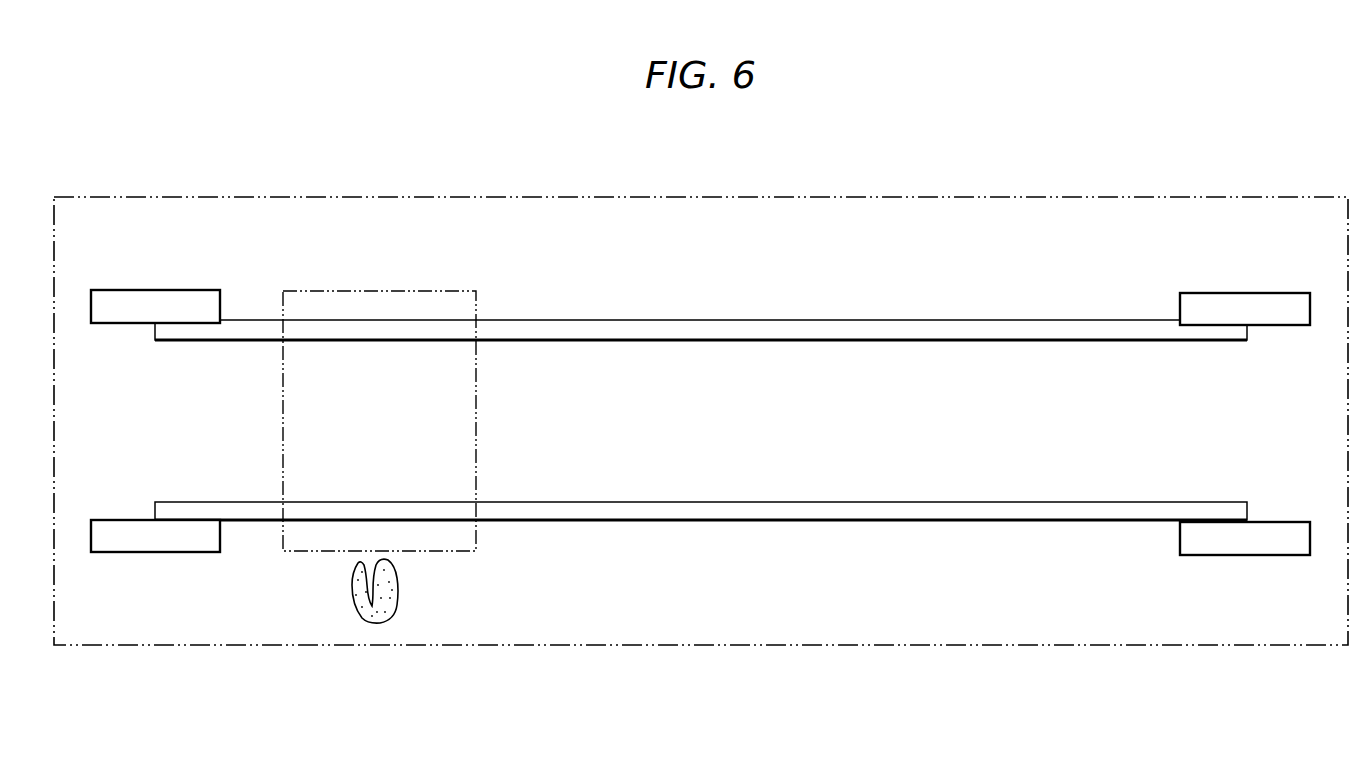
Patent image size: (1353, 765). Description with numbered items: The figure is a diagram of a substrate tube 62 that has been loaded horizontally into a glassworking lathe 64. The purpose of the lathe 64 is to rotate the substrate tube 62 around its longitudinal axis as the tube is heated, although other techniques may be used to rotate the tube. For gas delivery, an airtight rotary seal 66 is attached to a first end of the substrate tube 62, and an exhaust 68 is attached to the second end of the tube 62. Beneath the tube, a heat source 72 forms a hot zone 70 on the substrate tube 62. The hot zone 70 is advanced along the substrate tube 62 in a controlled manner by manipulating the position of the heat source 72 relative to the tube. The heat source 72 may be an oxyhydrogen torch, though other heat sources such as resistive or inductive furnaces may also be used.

The substrate tube 62 is at (863, 320).
The glassworking lathe 64 is at (697, 197).
The airtight rotary seal 66 is at (153, 290).
The exhaust 68 is at (1244, 292).
The hot zone 70 is at (476, 310).
The heat source 72 is at (398, 598).